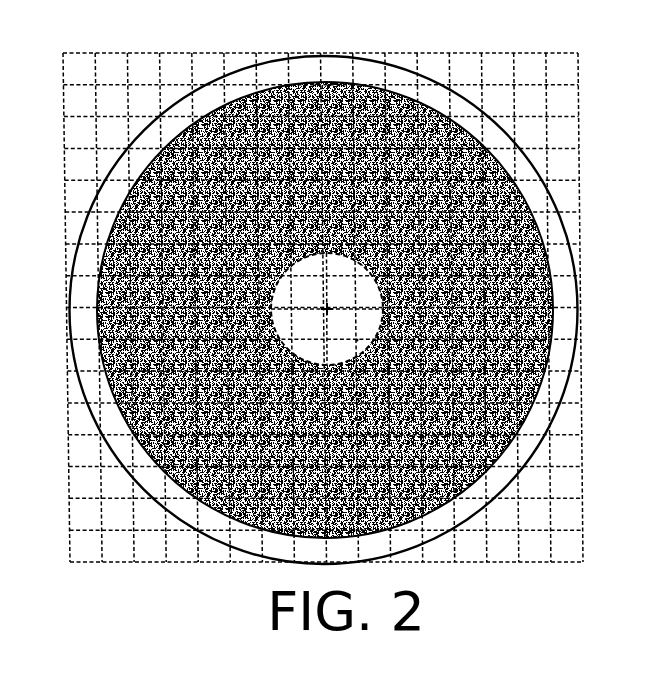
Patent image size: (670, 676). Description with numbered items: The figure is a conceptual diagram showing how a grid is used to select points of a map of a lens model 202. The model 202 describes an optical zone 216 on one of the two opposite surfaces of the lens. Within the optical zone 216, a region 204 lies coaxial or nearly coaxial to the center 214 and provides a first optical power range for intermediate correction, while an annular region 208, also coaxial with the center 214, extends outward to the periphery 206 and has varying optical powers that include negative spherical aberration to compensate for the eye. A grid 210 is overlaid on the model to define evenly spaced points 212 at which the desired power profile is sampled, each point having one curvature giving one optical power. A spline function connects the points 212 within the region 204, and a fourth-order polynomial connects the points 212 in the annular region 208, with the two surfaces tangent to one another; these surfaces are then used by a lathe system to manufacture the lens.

The model of a lens 202 is at (163, 108).
The region 204 is at (347, 257).
The periphery 206 is at (460, 127).
The annular region 208 is at (434, 219).
The grid 210 is at (578, 92).
The evenly spaced points 212 is at (423, 437).
The center 214 is at (327, 309).
The optical zone 216 is at (238, 428).